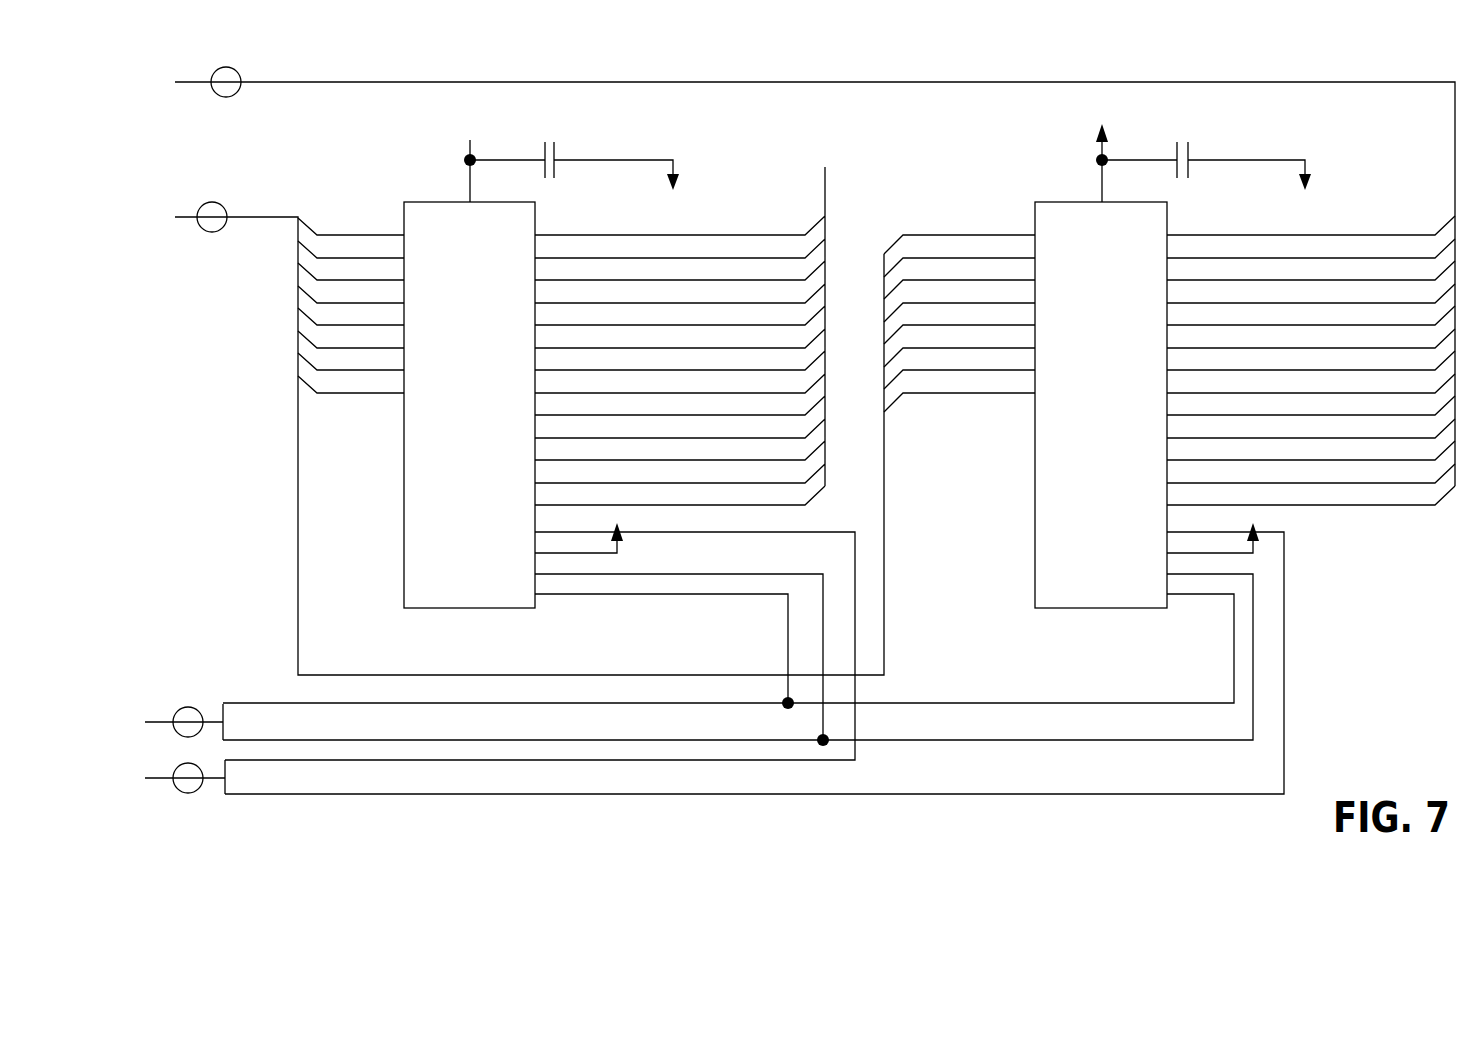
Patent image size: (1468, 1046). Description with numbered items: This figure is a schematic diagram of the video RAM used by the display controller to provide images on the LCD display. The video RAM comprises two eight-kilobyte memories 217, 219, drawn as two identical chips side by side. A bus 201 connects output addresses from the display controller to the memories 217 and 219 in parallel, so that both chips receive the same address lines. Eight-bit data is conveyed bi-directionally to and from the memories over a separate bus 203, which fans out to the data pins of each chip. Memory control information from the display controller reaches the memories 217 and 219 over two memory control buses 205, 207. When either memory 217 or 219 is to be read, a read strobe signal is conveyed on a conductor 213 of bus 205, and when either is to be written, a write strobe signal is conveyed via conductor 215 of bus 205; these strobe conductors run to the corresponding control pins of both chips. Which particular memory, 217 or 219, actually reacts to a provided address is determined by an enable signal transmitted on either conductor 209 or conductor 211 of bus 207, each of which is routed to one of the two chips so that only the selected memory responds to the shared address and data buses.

The bus 201 is at (231, 68).
The bus 203 is at (208, 231).
The memory control bus 205 is at (196, 706).
The memory control bus 207 is at (188, 793).
The conductor 209 is at (262, 760).
The conductor 211 is at (262, 795).
The conductor 213 is at (900, 703).
The conductor 215 is at (900, 740).
The memory 217 is at (404, 558).
The memory 219 is at (1035, 568).